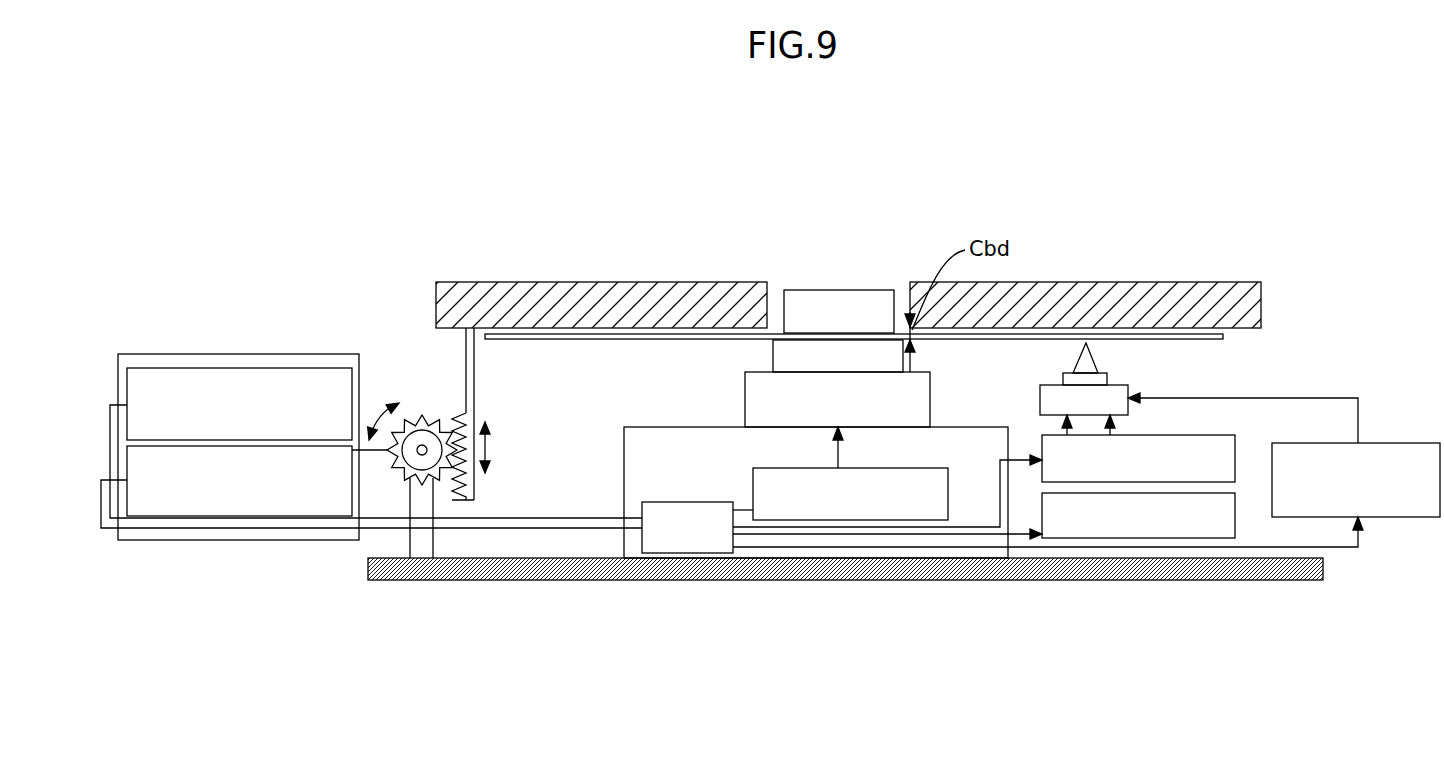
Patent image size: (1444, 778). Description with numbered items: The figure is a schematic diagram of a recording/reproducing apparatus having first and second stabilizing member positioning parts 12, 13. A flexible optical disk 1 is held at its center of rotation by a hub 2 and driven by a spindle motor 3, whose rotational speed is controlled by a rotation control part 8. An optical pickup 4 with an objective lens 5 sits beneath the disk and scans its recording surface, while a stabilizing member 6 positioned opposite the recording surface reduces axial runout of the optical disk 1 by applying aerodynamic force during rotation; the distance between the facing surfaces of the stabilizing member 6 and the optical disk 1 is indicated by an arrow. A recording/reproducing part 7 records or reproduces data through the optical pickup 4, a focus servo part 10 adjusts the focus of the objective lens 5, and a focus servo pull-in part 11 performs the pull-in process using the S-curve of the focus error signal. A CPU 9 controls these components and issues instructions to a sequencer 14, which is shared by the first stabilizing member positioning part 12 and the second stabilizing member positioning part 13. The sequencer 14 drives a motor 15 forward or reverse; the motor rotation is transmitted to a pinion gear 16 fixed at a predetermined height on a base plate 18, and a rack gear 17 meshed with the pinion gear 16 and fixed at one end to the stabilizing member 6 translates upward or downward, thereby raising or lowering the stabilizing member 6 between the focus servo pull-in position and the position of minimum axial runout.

The optical disk 1 is at (1197, 340).
The hub 2 is at (835, 297).
The spindle motor 3 is at (745, 398).
The optical pickup 4 is at (1128, 390).
The objective lens 5 is at (1107, 378).
The stabilizing member 6 is at (565, 283).
The recording/reproducing part 7 is at (1380, 443).
The rotation control part 8 is at (880, 468).
The CPU 9 is at (665, 502).
The focus servo part 10 is at (1237, 512).
The focus servo pull-in part 11 is at (1237, 450).
The first stabilizing member positioning part 12 is at (200, 368).
The second stabilizing member positioning part 13 is at (352, 496).
The sequencer 14 is at (371, 382).
The motor 15 is at (427, 416).
The pinion gear 16 is at (413, 420).
The rack gear 17 is at (470, 487).
The base plate 18 is at (912, 580).